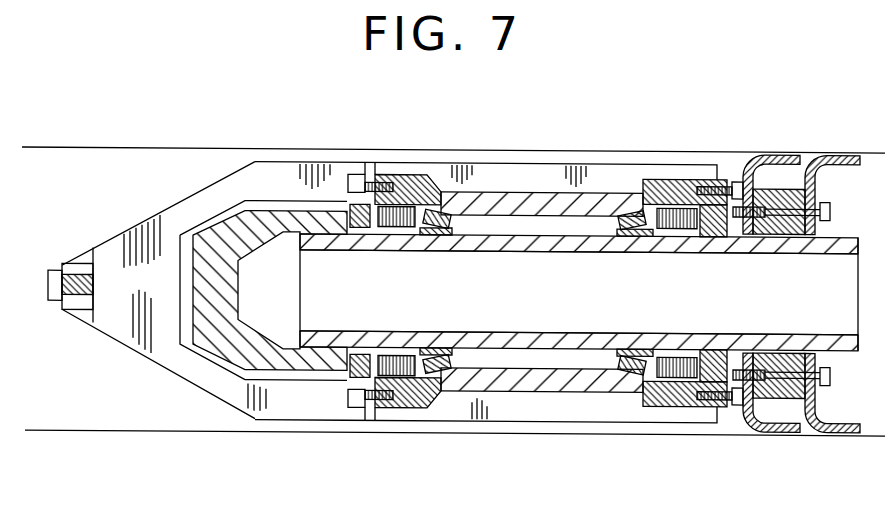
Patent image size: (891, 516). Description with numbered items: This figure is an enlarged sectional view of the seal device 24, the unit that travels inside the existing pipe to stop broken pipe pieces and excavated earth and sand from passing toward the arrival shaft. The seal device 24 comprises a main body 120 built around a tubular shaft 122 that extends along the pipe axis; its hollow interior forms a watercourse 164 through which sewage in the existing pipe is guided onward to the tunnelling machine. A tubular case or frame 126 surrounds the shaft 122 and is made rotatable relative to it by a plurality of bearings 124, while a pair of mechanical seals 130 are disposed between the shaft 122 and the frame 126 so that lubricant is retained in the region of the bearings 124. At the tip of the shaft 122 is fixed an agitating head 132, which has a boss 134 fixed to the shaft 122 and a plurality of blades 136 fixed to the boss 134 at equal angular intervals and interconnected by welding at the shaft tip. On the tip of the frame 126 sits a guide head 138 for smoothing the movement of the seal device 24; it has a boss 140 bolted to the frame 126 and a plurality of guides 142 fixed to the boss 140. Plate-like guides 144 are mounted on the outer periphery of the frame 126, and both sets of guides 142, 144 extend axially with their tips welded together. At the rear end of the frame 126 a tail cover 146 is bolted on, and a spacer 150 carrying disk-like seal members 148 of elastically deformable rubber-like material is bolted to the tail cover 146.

The seal device 24 is at (607, 163).
The main body 120 is at (382, 412).
The tubular shaft 122 is at (522, 337).
The bearings 124 is at (655, 348).
The frame 126 is at (597, 365).
The mechanical seals 130 is at (393, 352).
The agitating head 132 is at (230, 365).
The boss 134 is at (317, 363).
The blades 136 is at (193, 291).
The guide head 138 is at (248, 422).
The boss 140 is at (340, 406).
The guides 142 is at (157, 352).
The plate-like guides 144 is at (515, 173).
The tail cover 146 is at (727, 408).
The seal members 148 is at (752, 417).
The spacer 150 is at (780, 402).
The watercourse 164 is at (558, 284).